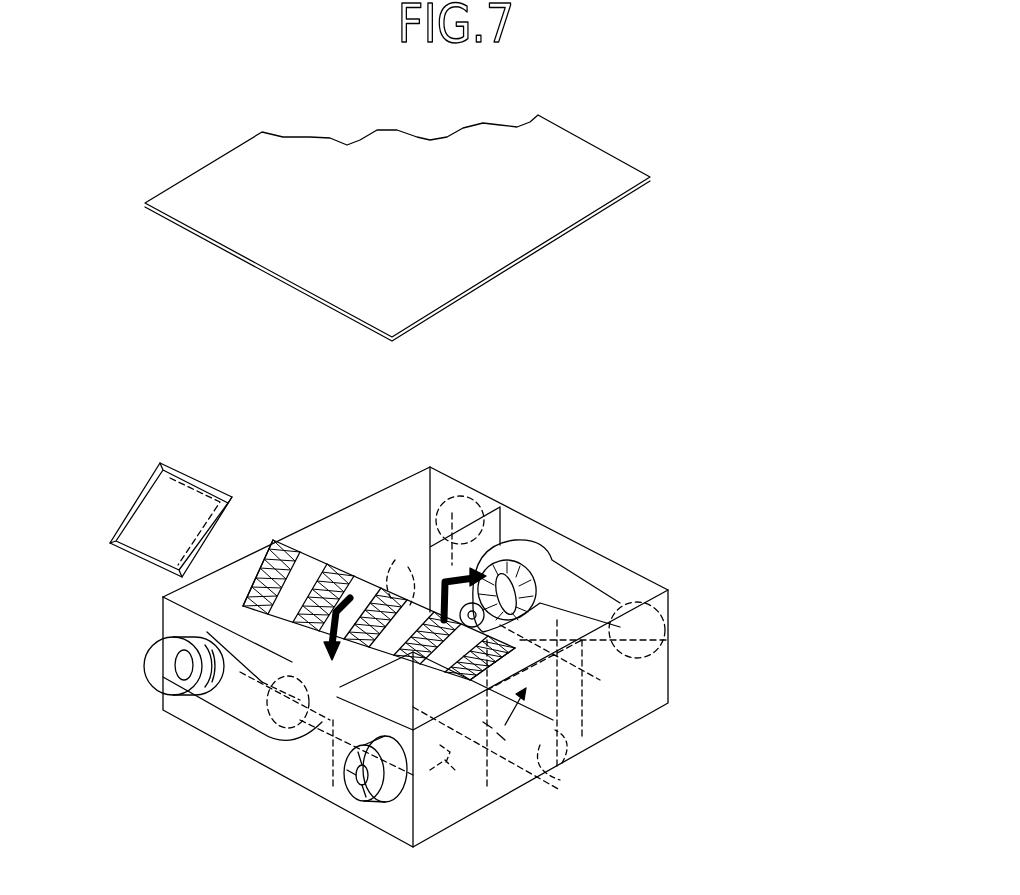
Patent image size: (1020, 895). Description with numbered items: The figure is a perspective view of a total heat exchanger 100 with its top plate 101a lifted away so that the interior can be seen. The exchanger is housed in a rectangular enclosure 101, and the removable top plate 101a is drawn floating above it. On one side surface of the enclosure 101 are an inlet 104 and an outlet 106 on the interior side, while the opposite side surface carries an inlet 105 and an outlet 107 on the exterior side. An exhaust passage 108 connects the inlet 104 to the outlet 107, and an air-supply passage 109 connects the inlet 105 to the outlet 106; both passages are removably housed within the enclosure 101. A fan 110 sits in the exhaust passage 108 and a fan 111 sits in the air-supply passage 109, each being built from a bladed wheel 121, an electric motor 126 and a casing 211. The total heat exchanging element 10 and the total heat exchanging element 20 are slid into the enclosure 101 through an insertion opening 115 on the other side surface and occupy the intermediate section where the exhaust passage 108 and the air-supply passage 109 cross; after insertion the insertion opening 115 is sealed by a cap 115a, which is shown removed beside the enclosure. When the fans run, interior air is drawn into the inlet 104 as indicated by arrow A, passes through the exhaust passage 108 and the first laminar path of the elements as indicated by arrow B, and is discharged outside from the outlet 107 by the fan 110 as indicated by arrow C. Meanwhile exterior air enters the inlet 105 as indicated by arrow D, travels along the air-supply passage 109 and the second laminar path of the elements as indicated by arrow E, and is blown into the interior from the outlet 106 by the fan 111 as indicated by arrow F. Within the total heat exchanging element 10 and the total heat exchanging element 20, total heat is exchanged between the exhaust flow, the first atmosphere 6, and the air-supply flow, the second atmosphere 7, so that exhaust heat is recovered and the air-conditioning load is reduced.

The top plate 101a is at (592, 157).
The total heat exchanger 100 is at (661, 396).
The enclosure 101 is at (430, 467).
The total heat exchanging element 10 is at (379, 541).
The total heat exchanging element 20 is at (379, 541).
The insertion opening 115 is at (273, 540).
The cap 115a is at (137, 500).
The casing 211 is at (225, 628).
The outlet 106 is at (160, 650).
The fan 111 is at (257, 737).
The inlet 104 is at (353, 763).
The fan 110 is at (574, 534).
The bladed wheel 121 is at (547, 558).
The electric motor 126 is at (507, 563).
The inlet 105 is at (463, 505).
The air-supply passage 109 is at (400, 560).
The outlet 107 is at (668, 630).
The exhaust passage 108 is at (447, 770).
The first atmosphere 6 is at (497, 733).
The second atmosphere 7 is at (520, 737).
The arrow A is at (348, 802).
The arrow B is at (408, 567).
The arrow C is at (680, 608).
The arrow D is at (514, 488).
The arrow E is at (327, 620).
The arrow F is at (168, 669).